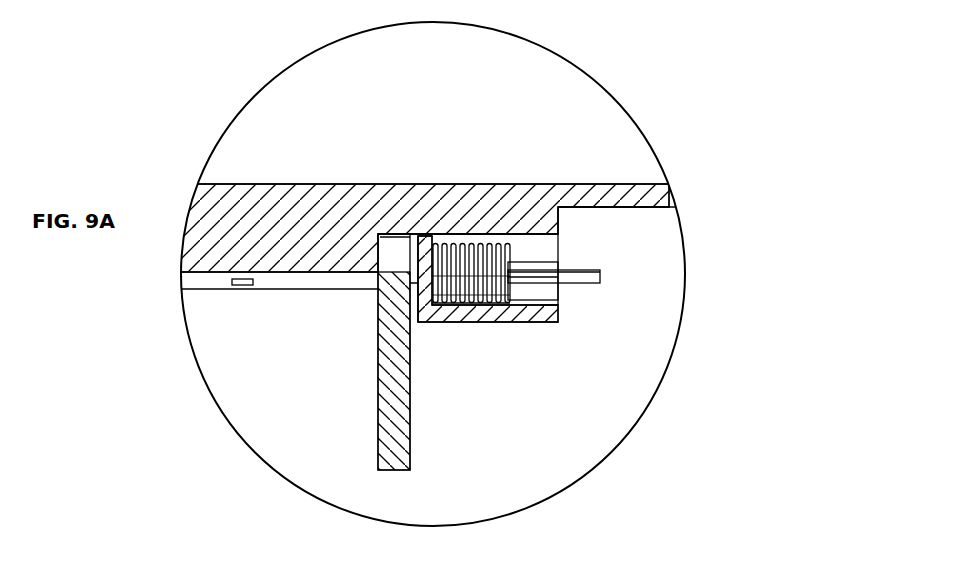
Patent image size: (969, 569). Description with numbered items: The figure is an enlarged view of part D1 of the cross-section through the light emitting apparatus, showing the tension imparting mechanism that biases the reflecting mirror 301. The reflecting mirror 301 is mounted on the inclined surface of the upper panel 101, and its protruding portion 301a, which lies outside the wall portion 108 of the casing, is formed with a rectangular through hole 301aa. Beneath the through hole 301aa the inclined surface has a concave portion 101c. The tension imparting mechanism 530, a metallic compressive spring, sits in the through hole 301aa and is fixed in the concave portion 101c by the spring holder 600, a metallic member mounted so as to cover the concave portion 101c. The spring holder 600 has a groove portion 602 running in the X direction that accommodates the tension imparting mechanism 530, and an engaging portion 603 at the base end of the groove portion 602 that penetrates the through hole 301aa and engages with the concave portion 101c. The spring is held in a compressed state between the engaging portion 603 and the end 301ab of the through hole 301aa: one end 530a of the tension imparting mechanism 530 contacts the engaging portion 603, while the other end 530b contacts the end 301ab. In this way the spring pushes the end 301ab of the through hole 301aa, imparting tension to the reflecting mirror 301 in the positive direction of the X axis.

The part D1 is at (572, 62).
The upper panel 101 is at (571, 187).
The concave portion 101c is at (521, 242).
The wall portion 108 is at (410, 432).
The reflecting mirror 301 is at (575, 280).
The protruding portion 301a is at (575, 280).
The through hole 301aa is at (575, 253).
The end of the through hole 301ab is at (513, 263).
The tension imparting mechanism 530 is at (447, 240).
The one end of the tension imparting mechanism 530a is at (437, 248).
The other end of the tension imparting mechanism 530b is at (495, 305).
The spring holder 600 is at (520, 313).
The groove portion 602 is at (555, 320).
The engaging portion 603 is at (413, 300).